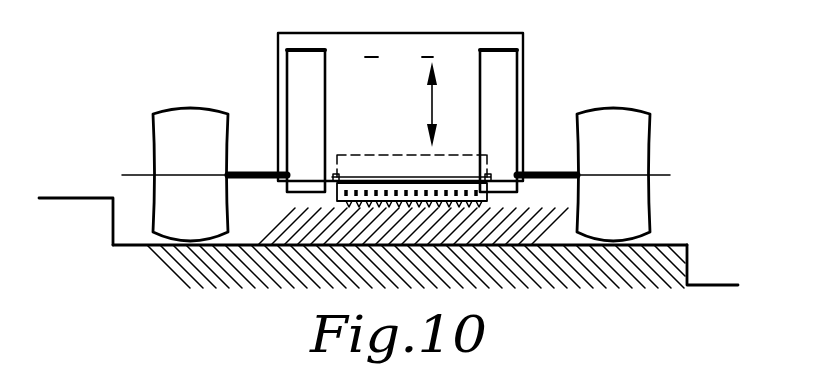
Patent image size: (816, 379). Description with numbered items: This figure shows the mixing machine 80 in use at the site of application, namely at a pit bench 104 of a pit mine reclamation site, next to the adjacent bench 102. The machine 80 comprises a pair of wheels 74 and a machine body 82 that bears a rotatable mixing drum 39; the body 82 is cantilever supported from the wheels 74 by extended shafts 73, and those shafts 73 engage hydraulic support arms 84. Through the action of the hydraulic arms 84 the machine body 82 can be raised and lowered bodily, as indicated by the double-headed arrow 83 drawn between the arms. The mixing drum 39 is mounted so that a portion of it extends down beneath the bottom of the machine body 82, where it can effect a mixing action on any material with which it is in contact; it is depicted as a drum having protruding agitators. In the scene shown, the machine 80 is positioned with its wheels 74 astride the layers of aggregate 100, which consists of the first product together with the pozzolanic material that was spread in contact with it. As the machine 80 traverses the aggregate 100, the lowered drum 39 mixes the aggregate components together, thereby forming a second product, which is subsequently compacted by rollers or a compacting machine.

The mixing machine 80 is at (529, 38).
The hydraulic support arms 84 is at (287, 110).
The machine body 82 is at (399, 56).
The arrow 83 is at (432, 107).
The extended shafts 73 is at (247, 172).
The wheels 74 is at (170, 107).
The mixing drum 39 is at (490, 198).
The aggregate 100 is at (300, 211).
The adjacent bench 102 is at (63, 198).
The pit bench 104 is at (672, 245).